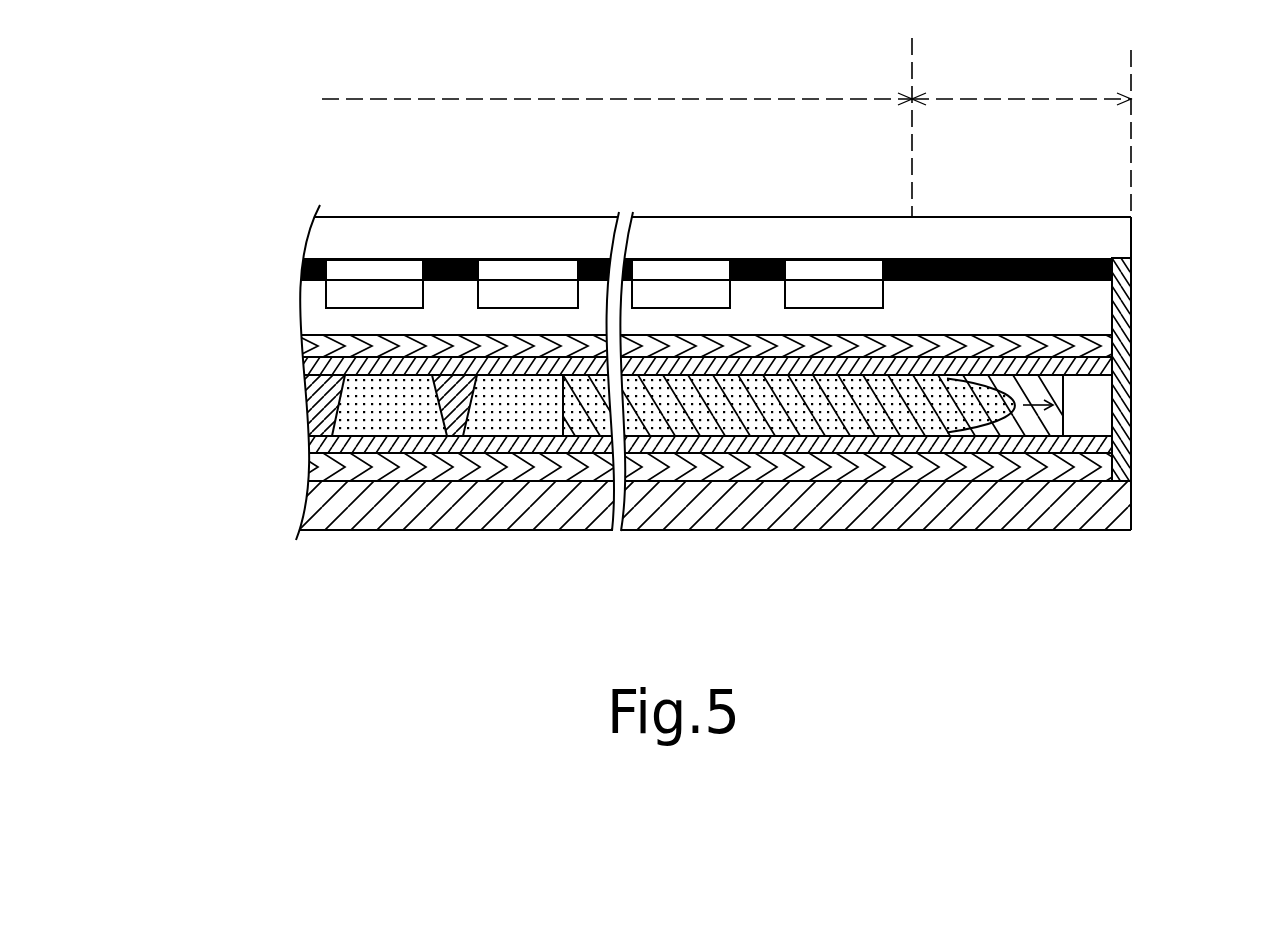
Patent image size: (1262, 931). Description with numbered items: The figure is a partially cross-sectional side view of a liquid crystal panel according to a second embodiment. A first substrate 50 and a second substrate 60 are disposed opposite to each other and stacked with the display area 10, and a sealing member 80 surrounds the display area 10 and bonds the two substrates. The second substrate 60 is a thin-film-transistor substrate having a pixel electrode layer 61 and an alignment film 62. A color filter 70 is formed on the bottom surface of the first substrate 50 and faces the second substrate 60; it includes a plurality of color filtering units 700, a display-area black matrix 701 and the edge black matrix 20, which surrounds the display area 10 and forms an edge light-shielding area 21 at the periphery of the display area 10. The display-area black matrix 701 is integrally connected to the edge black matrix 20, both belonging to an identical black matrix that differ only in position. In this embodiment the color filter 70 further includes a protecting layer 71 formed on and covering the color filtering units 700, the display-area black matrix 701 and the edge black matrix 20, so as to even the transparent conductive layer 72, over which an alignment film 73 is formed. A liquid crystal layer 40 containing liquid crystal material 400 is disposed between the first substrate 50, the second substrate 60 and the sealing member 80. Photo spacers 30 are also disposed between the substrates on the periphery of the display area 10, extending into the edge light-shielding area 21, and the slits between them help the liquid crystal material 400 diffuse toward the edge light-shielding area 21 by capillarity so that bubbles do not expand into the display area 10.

The display area 10 is at (708, 96).
The edge light-shielding area 21 is at (991, 92).
The edge black matrix 20 is at (1003, 257).
The first substrate 50 is at (384, 193).
The color filter 70 is at (173, 233).
The color filtering units 700 is at (547, 217).
The display-area black matrix 701 is at (298, 266).
The protecting layer 71 is at (298, 318).
The transparent conductive layer 72 is at (300, 350).
The alignment film 73 is at (305, 377).
The liquid crystal layer 40 is at (721, 488).
The liquid crystal material 400 is at (935, 416).
The photo spacers 30 is at (1063, 408).
The sealing member 80 is at (1130, 295).
The second substrate 60 is at (713, 543).
The pixel electrode layer 61 is at (723, 472).
The alignment film 62 is at (413, 458).